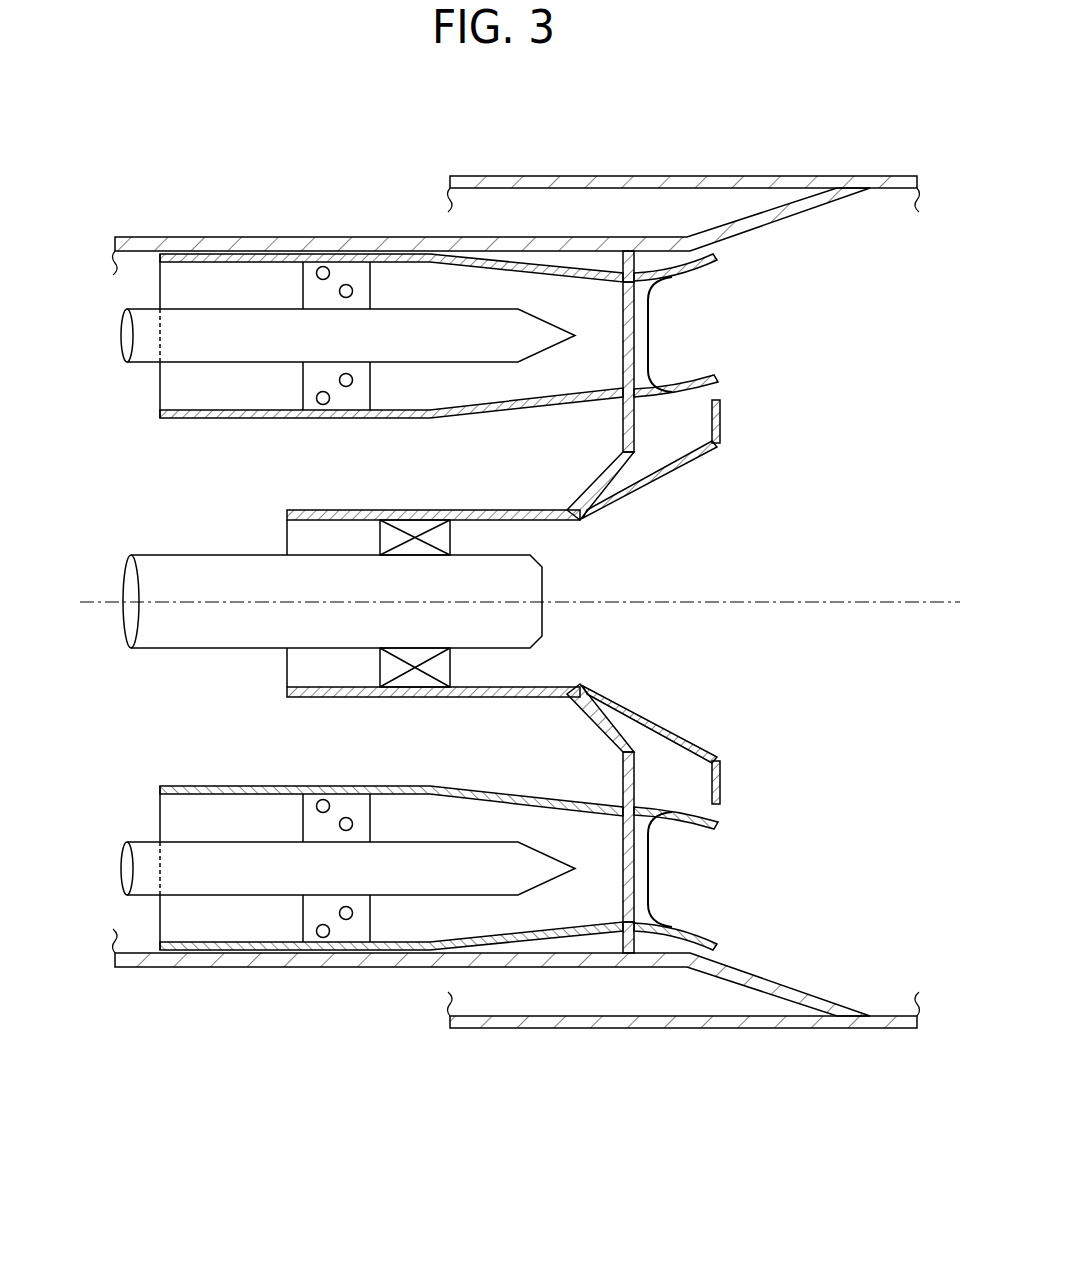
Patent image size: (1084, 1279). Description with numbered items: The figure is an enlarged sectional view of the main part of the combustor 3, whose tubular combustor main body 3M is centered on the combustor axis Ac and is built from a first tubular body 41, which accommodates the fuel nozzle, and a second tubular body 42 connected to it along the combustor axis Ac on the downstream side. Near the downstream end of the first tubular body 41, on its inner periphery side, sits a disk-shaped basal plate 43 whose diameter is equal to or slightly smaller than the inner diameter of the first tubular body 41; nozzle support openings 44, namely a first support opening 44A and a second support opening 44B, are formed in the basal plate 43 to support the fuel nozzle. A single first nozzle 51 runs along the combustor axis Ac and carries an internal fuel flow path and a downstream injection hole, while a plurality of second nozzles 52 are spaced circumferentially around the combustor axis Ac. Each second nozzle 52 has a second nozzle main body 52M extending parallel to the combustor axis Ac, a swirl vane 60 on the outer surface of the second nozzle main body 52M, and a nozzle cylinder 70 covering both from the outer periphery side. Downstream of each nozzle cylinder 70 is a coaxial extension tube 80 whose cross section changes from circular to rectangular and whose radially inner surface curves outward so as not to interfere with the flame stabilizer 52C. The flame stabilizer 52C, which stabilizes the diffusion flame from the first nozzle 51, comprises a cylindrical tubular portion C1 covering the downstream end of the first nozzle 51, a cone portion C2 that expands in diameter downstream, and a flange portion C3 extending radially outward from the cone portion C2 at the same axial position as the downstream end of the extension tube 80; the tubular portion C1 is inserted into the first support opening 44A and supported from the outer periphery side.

The combustor 3 is at (169, 210).
The combustor main body 3M is at (516, 559).
The first tubular body 41 is at (265, 236).
The second tubular body 42 is at (672, 185).
The basal plate 43 is at (621, 266).
The nozzle support openings 44 is at (632, 1085).
The first support opening 44A is at (566, 684).
The second support opening 44B is at (627, 926).
The first nozzle 51 is at (195, 554).
The second nozzle 52 is at (100, 331).
The second nozzle main body 52M is at (226, 364).
The flame stabilizer 52C is at (714, 734).
The swirl vane 60 is at (340, 268).
The nozzle cylinder 70 is at (510, 261).
The extension tube 80 is at (707, 264).
The tubular portion C1 is at (465, 698).
The cone portion C2 is at (653, 723).
The flange portion C3 is at (721, 777).
The combustor axis Ac is at (880, 598).